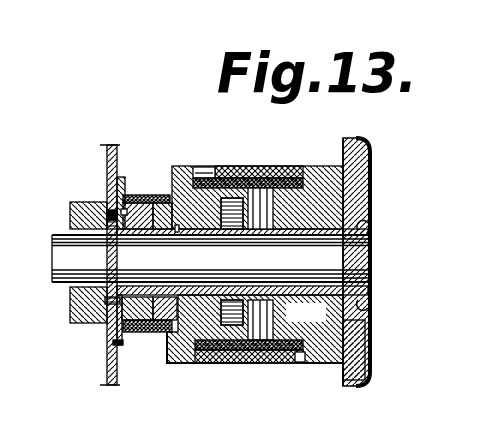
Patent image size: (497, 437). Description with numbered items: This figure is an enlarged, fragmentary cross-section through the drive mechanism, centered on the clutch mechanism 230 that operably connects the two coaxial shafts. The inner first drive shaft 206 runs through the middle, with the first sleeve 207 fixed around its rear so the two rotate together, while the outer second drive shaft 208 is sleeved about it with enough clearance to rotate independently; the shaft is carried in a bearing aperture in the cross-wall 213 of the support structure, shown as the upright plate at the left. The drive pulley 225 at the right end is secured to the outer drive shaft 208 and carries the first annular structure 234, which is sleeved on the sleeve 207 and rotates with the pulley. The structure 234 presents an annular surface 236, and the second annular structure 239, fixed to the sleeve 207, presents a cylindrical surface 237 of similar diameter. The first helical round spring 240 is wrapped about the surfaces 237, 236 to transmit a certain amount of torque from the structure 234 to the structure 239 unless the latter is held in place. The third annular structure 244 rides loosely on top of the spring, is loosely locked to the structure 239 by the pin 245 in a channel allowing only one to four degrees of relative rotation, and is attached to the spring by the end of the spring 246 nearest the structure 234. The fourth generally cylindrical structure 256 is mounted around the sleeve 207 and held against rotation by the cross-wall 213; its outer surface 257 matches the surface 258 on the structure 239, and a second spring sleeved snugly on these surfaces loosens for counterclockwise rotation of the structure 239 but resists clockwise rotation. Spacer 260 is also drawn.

The first drive shaft 206 is at (371, 313).
The first sleeve 207 is at (332, 297).
The second drive shaft 208 is at (372, 221).
The cross-wall 213 is at (106, 173).
The drive pulley 225 is at (364, 352).
The clutch mechanism 230 is at (218, 134).
The first annular structure 234 is at (331, 366).
The annular surface 236 is at (277, 366).
The cylindrical surface 237 is at (228, 364).
The second annular structure 239 is at (181, 366).
The first helical round spring 240 is at (235, 366).
The third annular structure 244 is at (249, 166).
The pin 245 is at (210, 166).
The end of the spring 246 is at (318, 363).
The fourth generally cylindrical structure 256 is at (140, 206).
The outer surface 257 is at (106, 341).
The surface 258 is at (160, 334).
The spacer 260 is at (181, 312).